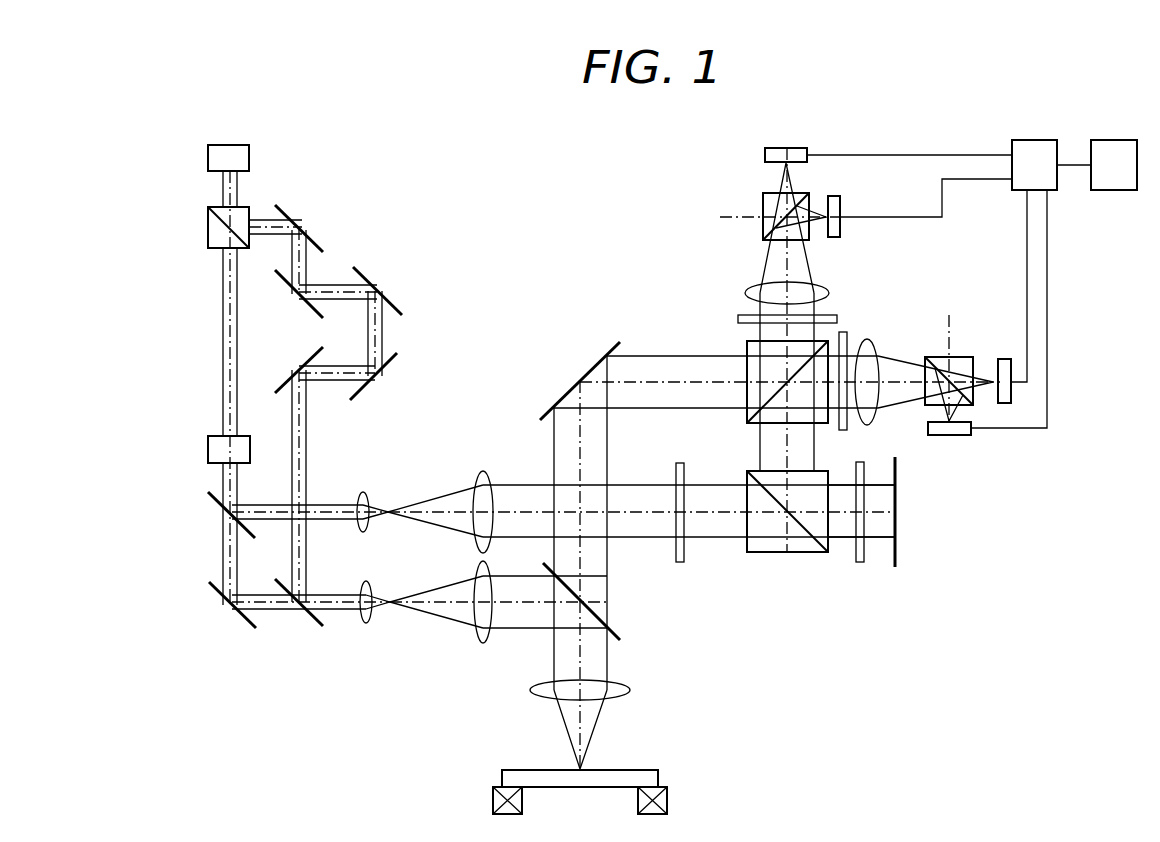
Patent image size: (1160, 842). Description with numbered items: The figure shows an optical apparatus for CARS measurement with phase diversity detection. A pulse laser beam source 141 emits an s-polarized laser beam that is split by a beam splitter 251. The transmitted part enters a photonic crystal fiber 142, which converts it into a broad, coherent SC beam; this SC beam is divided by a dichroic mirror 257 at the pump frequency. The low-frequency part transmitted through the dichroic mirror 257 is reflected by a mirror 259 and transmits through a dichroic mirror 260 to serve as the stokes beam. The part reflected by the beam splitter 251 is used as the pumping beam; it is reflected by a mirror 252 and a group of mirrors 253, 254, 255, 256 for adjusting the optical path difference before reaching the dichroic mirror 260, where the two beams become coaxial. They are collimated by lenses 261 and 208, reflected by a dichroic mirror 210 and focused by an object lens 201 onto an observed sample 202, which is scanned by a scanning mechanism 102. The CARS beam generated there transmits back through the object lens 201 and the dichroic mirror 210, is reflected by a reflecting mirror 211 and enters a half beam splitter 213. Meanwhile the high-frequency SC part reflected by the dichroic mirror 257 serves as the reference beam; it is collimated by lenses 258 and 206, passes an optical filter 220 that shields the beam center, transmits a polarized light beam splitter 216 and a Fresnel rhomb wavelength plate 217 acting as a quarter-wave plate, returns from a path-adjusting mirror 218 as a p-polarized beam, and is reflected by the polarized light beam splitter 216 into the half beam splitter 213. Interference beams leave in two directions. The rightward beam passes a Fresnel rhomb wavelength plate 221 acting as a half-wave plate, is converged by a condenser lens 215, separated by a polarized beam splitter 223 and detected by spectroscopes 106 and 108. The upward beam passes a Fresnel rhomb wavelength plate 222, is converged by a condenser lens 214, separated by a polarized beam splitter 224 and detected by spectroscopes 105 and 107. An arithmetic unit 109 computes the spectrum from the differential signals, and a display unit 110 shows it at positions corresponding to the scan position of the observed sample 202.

The pulse laser beam source 141 is at (230, 145).
The photonic crystal fiber 142 is at (208, 448).
The beam splitter 251 is at (208, 218).
The mirror 252 is at (302, 223).
The mirror 253 is at (296, 298).
The mirror 254 is at (378, 290).
The mirror 255 is at (382, 380).
The mirror 256 is at (295, 372).
The dichroic mirror 257 is at (212, 510).
The lens 258 is at (363, 491).
The mirror 259 is at (220, 604).
The dichroic mirror 260 is at (308, 614).
The lens 261 is at (366, 624).
The lens 206 is at (475, 474).
The lens 208 is at (474, 571).
The reflecting mirror 211 is at (563, 398).
The dichroic mirror 210 is at (630, 632).
The optical filter 220 is at (680, 562).
The object lens 201 is at (530, 690).
The observed sample 202 is at (635, 770).
The scanning mechanism 102 is at (667, 797).
The polarized light beam splitter 216 is at (792, 552).
The Fresnel rhomb wavelength plate 217 is at (860, 562).
The mirror 218 is at (897, 544).
The half beam splitter 213 is at (747, 345).
The Fresnel rhomb wavelength plate 222 is at (738, 318).
The condenser lens 214 is at (745, 290).
The Fresnel rhomb wavelength plate 221 is at (843, 332).
The condenser lens 215 is at (870, 340).
The polarized beam splitter 224 is at (763, 201).
The spectroscope 105 is at (787, 148).
The spectroscope 107 is at (840, 205).
The polarized beam splitter 223 is at (935, 357).
The spectroscope 106 is at (1004, 359).
The spectroscope 108 is at (950, 435).
The arithmetic unit 109 is at (1038, 140).
The display unit 110 is at (1118, 140).